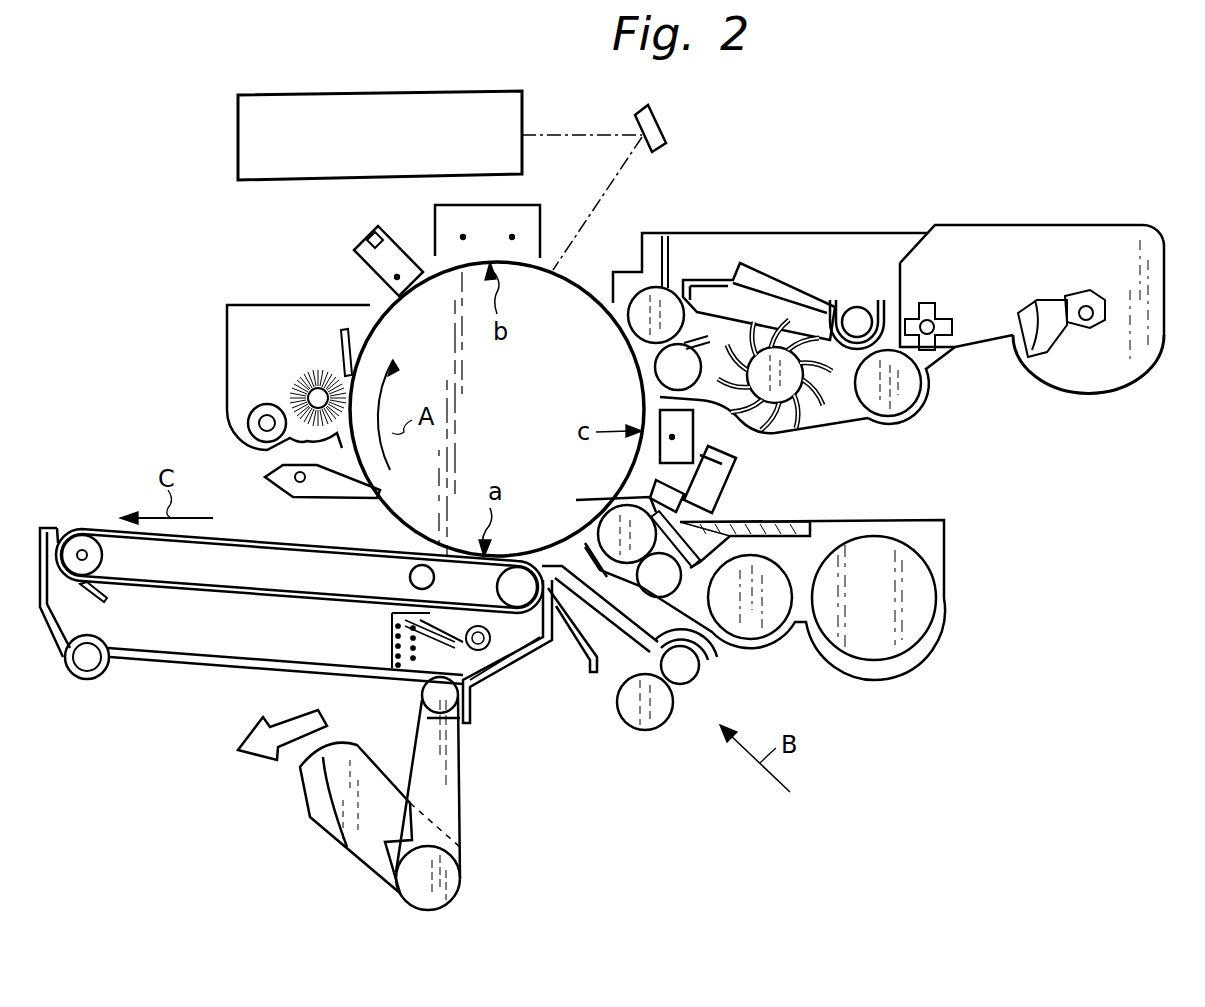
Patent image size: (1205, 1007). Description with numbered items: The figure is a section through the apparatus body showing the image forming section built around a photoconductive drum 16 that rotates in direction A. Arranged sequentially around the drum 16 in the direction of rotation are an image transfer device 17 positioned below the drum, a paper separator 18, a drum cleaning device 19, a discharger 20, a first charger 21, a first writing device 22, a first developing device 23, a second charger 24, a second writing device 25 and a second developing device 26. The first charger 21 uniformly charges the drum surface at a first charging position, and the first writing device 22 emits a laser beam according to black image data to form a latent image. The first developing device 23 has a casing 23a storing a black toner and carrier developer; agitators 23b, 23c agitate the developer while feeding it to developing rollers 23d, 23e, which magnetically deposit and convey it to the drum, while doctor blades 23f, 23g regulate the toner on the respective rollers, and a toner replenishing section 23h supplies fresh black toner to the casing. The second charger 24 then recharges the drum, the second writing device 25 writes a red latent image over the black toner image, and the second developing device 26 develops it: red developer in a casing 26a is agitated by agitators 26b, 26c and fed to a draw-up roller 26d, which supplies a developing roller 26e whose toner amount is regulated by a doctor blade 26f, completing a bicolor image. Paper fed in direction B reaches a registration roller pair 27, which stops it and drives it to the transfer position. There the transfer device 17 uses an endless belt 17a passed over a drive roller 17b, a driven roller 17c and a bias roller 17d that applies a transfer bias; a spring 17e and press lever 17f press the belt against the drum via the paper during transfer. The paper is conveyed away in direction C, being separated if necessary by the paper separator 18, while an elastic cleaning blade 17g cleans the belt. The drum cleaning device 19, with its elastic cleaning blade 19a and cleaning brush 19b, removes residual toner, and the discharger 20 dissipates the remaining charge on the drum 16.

The photoconductive drum 16 is at (592, 296).
The image transfer device 17 is at (318, 700).
The endless belt 17a is at (205, 545).
The drive roller 17b is at (104, 557).
The driven roller 17c is at (499, 588).
The bias roller 17d is at (410, 578).
The spring 17e is at (395, 660).
The press lever 17f is at (392, 616).
The elastic cleaning blade 17g is at (100, 608).
The paper separator 18 is at (333, 498).
The drum cleaning device 19 is at (265, 377).
The elastic cleaning blade 19a is at (340, 357).
The cleaning brush 19b is at (290, 390).
The discharger 20 is at (358, 243).
The first charger 21 is at (532, 205).
The first writing device 22 is at (238, 135).
The first developing device 23 is at (864, 313).
The casing 23a is at (948, 357).
The agitator 23b is at (922, 415).
The agitator 23c is at (840, 412).
The developing roller 23d is at (640, 326).
The developing roller 23e is at (656, 372).
The doctor blade 23f is at (670, 240).
The doctor blade 23g is at (715, 283).
The toner replenishing section 23h is at (1112, 392).
The second charger 24 is at (725, 432).
The second writing device 25 is at (740, 462).
The second developing device 26 is at (785, 601).
The casing 26a is at (945, 579).
The agitator 26b is at (905, 656).
The agitator 26c is at (795, 640).
The draw-up roller 26d is at (680, 595).
The developing roller 26e is at (612, 516).
The doctor blade 26f is at (662, 512).
The registration roller pair 27 is at (692, 680).